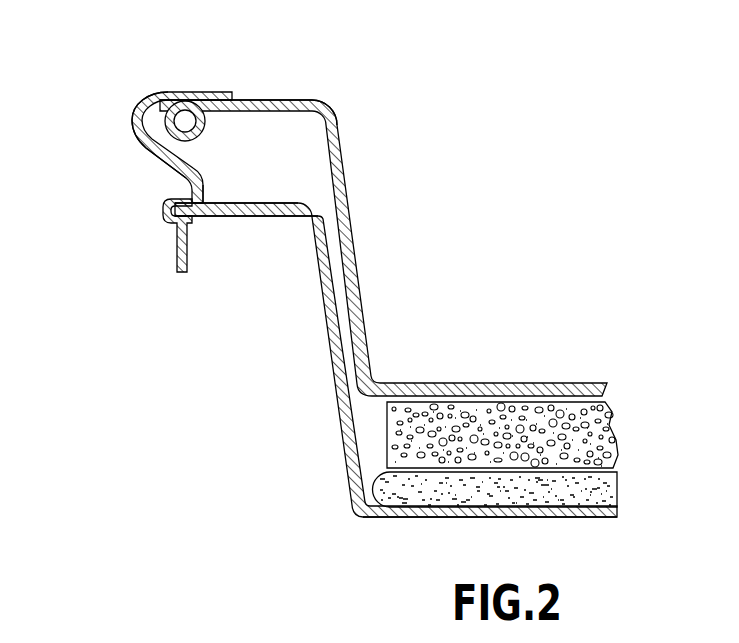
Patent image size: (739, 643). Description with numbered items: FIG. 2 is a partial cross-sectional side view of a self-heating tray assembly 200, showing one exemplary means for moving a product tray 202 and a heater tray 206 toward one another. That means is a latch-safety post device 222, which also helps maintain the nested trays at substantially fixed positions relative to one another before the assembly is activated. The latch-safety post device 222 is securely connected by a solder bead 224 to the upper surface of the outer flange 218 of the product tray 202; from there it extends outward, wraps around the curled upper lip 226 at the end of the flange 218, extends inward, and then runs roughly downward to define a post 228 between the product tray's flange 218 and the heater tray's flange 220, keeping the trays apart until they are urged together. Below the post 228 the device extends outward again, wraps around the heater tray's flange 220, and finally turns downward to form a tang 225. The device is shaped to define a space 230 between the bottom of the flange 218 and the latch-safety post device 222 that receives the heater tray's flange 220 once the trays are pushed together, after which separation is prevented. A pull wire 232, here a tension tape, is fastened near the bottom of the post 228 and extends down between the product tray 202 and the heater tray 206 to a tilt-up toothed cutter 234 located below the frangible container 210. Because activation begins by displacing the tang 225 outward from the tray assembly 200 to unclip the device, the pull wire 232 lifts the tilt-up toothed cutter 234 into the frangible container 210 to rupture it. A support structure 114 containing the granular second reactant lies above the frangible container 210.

The tray assembly 200 is at (548, 240).
The product tray 202 is at (353, 253).
The heater tray 206 is at (329, 355).
The outer flange of the product tray 218 is at (283, 100).
The solder bead 224 is at (194, 96).
The curled upper lip 226 is at (141, 106).
The space 230 is at (151, 133).
The latch-safety post device 222 is at (146, 179).
The post 228 is at (212, 187).
The pull wire 232 is at (268, 203).
The tang 225 is at (177, 243).
The heater tray's flange 220 is at (253, 236).
The support structure 114 is at (545, 408).
The frangible container 210 is at (617, 490).
The tilt-up toothed cutter 234 is at (400, 519).